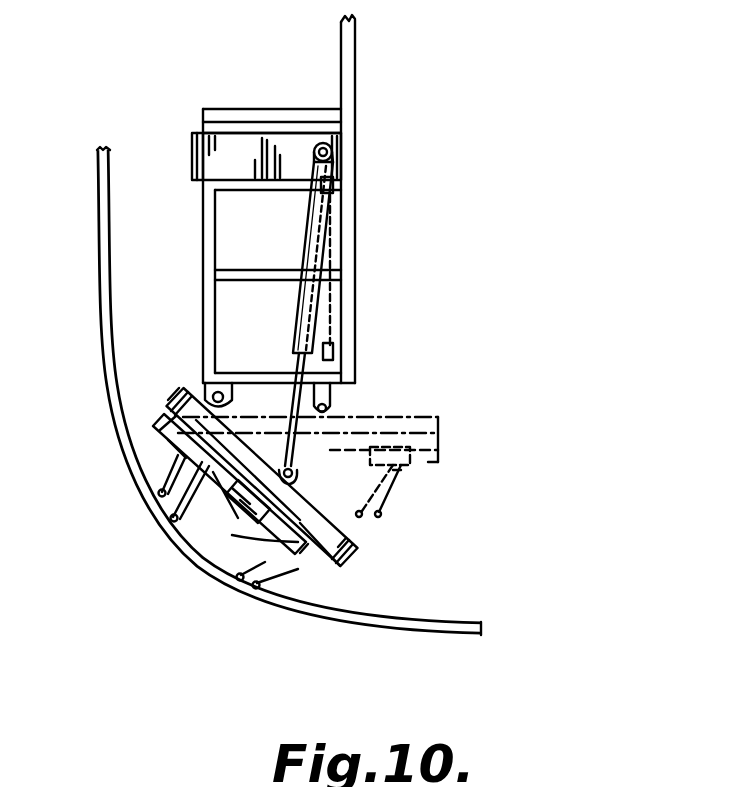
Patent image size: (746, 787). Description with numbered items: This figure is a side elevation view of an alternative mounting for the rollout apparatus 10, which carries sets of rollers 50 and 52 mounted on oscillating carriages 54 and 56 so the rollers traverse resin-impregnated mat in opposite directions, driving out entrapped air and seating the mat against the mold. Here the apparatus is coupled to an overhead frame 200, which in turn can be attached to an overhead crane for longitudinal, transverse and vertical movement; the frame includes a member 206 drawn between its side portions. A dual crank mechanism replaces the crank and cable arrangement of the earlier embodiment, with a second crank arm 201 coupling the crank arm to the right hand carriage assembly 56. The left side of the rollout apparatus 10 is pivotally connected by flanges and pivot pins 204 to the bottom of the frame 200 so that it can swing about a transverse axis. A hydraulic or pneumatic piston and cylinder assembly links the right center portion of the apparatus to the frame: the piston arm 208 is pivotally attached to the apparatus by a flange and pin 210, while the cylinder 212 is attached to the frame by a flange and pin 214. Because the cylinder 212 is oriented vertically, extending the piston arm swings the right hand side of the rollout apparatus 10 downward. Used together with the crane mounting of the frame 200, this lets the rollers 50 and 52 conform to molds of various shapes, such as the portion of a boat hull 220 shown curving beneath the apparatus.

The rollout apparatus 10 is at (455, 447).
The rollers 50 is at (148, 472).
The rollers 52 is at (277, 603).
The oscillating carriage 54 is at (175, 443).
The oscillating carriage 56 is at (313, 562).
The overhead frame 200 is at (195, 278).
The second crank arm 201 is at (243, 517).
The pivot pins 204 is at (194, 380).
The frame member 206 is at (282, 327).
The piston arm 208 is at (326, 395).
The flange and pin 210 is at (308, 491).
The cylinder 212 is at (325, 243).
The flange and pin 214 is at (344, 155).
The boat hull 220 is at (430, 640).